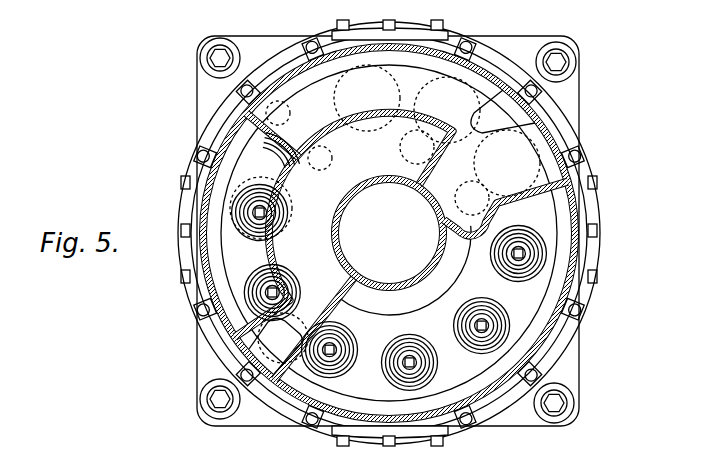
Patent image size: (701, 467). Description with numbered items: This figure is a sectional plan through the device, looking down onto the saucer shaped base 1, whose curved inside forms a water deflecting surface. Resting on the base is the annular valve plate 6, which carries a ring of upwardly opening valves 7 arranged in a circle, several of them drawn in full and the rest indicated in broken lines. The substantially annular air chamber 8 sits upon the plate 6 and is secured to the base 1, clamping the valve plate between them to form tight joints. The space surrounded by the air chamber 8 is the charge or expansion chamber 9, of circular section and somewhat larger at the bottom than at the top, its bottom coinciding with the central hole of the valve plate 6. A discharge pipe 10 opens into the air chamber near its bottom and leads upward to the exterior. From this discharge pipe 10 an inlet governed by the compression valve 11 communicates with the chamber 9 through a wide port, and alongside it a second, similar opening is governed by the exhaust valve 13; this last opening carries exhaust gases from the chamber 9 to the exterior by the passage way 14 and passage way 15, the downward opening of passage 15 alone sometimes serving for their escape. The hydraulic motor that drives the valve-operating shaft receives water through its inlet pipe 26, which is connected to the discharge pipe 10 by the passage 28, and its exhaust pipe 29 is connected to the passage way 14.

The base 1 is at (582, 374).
The valve plate 6 is at (422, 362).
The valves 7 is at (340, 382).
The air chamber 8 is at (257, 223).
The charge or expansion chamber 9 is at (389, 233).
The discharge pipe 10 is at (503, 112).
The compression valve 11 is at (506, 208).
The exhaust valve 13 is at (417, 147).
The passage way 14 is at (272, 208).
The passage way 15 is at (278, 343).
The inlet pipe 26 is at (283, 106).
The passage 28 is at (456, 83).
The exhaust pipe 29 is at (333, 155).